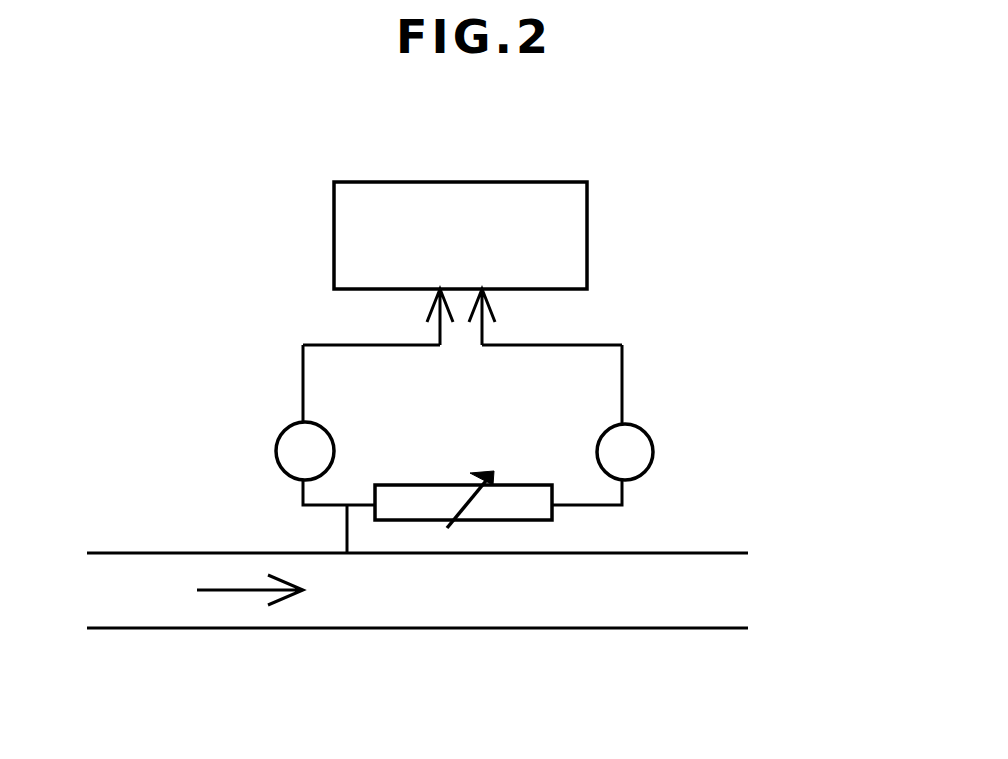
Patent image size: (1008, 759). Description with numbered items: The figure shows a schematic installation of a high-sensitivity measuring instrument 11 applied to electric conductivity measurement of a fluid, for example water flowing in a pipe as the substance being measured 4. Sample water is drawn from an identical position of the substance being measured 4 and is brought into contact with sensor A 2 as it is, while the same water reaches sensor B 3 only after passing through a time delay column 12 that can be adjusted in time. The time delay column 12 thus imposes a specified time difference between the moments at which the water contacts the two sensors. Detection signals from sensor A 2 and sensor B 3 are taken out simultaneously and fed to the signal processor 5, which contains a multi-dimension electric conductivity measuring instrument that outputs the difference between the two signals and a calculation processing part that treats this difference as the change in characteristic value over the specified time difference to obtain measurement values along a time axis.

The high-sensitivity measuring instrument 11 is at (603, 162).
The signal processor 5 is at (587, 237).
The sensor A 2 is at (284, 431).
The sensor B 3 is at (648, 433).
The time delay column 12 is at (418, 485).
The substance being measured 4 is at (130, 593).